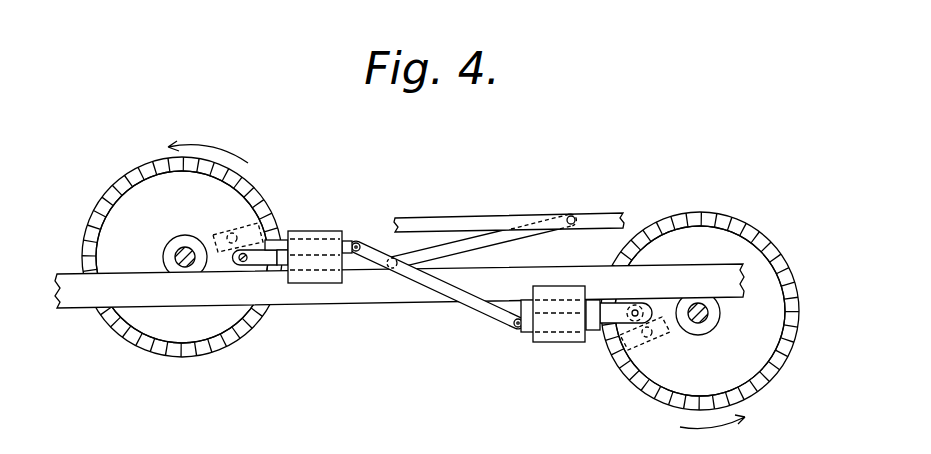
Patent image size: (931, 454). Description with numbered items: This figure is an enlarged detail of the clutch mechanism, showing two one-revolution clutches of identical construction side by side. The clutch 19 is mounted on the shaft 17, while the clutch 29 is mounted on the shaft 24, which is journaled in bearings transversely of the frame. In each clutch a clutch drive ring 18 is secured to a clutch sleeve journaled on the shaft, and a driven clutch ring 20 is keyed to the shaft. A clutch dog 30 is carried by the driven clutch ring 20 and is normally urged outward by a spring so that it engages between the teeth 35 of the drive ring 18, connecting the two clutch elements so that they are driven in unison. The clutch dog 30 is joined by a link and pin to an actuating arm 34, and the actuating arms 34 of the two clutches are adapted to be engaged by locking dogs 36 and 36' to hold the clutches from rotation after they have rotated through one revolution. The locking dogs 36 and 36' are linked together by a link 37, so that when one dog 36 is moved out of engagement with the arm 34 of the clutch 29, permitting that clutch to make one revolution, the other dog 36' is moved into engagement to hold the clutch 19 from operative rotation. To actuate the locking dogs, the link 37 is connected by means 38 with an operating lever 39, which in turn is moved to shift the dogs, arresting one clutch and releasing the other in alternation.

The shaft 17 is at (701, 321).
The clutch drive ring 18 is at (113, 330).
The clutch 19 is at (739, 207).
The driven clutch ring 20 is at (125, 223).
The shaft 24 is at (186, 249).
The clutch 29 is at (120, 196).
The clutch dog 30 is at (256, 225).
The actuating arm 34 is at (265, 268).
The teeth 35 is at (178, 357).
The locking dog 36 is at (328, 238).
The locking dog 36' is at (556, 334).
The link 37 is at (484, 312).
The connecting means 38 is at (473, 243).
The operating lever 39 is at (600, 218).